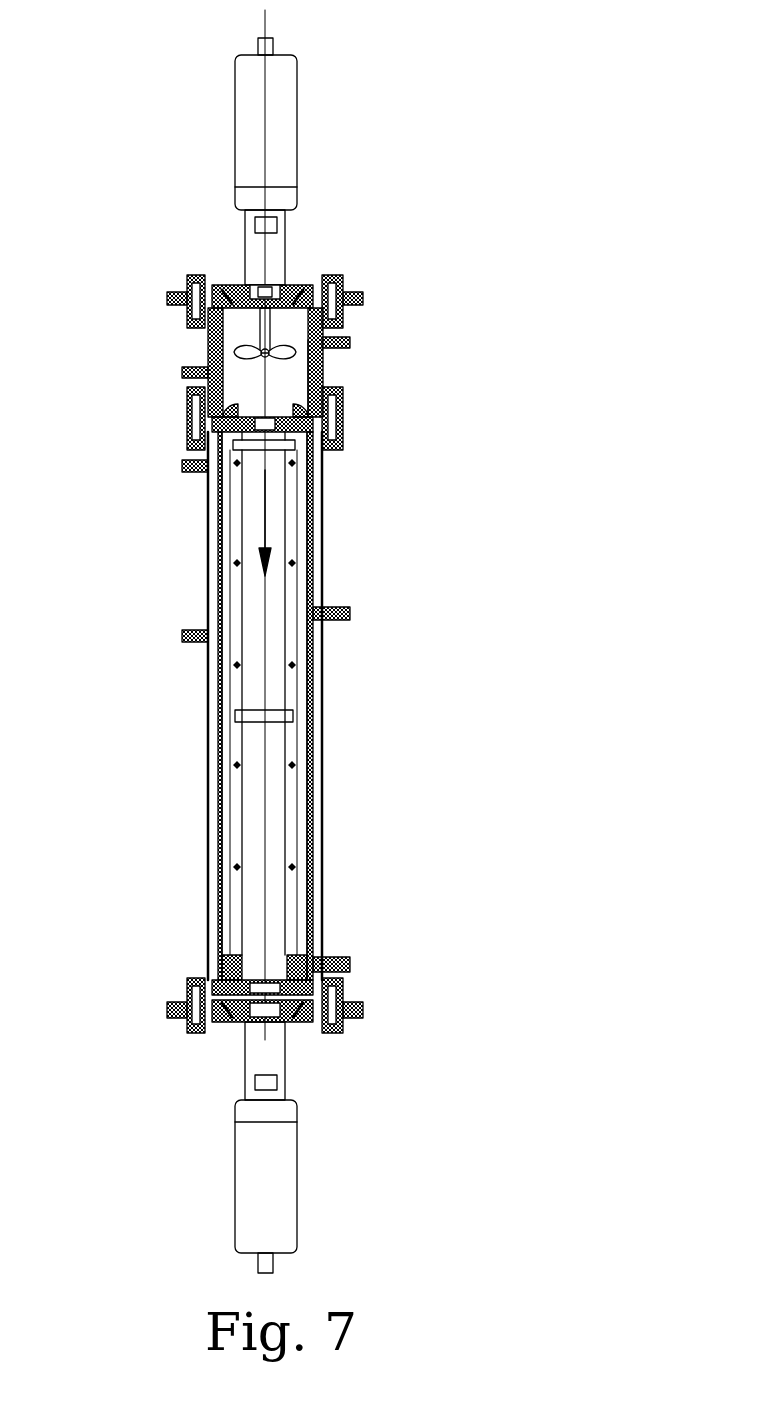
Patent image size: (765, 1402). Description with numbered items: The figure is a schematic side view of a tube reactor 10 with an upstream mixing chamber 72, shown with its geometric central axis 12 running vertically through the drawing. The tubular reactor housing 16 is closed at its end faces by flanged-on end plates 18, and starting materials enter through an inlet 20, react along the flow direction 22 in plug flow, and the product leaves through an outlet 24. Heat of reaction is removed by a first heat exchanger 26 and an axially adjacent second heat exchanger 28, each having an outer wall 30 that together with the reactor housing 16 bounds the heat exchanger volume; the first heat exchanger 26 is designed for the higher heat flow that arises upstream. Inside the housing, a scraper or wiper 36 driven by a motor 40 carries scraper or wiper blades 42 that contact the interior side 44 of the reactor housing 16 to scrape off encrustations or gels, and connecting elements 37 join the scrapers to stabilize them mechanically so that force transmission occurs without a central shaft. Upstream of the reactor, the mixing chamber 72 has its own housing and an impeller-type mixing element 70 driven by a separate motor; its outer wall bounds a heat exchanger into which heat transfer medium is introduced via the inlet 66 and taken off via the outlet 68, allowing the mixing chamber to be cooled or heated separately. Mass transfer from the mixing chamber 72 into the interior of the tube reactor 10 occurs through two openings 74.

The reactor 10 is at (468, 146).
The geometric central axis 12 is at (268, 16).
The tubular reactor housing 16 is at (205, 740).
The end plates 18 is at (355, 425).
The inlet 20 is at (314, 276).
The flow direction 22 is at (272, 545).
The outlet 24 is at (212, 282).
The first heat exchanger 26 is at (205, 563).
The second heat exchanger 28 is at (190, 830).
The outer wall 30 is at (260, 758).
The scraper or wiper 36 is at (210, 930).
The connecting elements 37 is at (205, 768).
The motor 40 is at (270, 1188).
The scraper or wiper blades 42 is at (302, 950).
The interior side 44 is at (283, 142).
The inlet 66 is at (182, 373).
The outlet 68 is at (360, 336).
The mixing element 70 is at (287, 370).
The mixing chamber 72 is at (284, 403).
The openings 74 is at (190, 436).